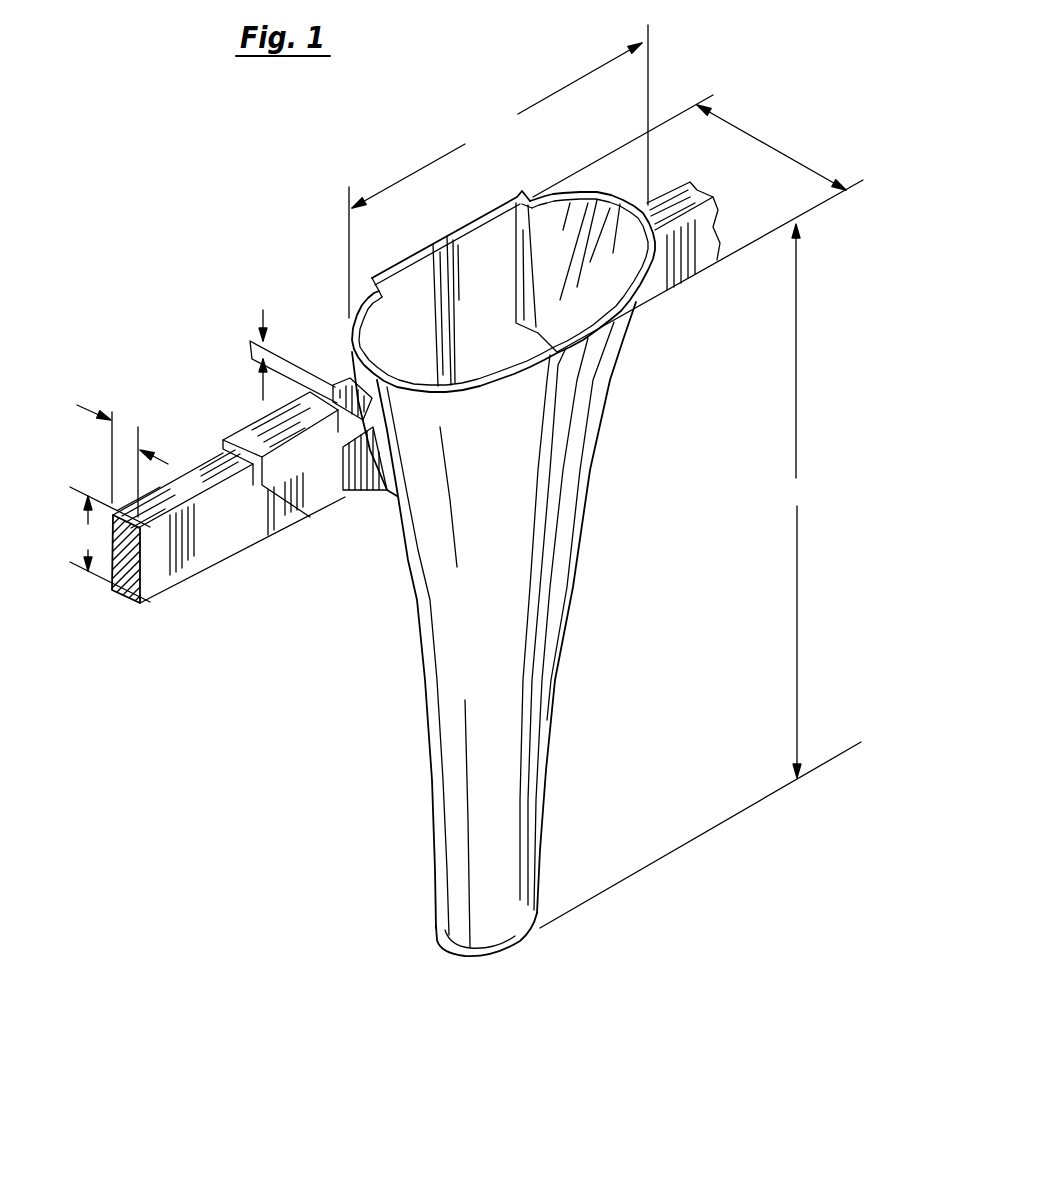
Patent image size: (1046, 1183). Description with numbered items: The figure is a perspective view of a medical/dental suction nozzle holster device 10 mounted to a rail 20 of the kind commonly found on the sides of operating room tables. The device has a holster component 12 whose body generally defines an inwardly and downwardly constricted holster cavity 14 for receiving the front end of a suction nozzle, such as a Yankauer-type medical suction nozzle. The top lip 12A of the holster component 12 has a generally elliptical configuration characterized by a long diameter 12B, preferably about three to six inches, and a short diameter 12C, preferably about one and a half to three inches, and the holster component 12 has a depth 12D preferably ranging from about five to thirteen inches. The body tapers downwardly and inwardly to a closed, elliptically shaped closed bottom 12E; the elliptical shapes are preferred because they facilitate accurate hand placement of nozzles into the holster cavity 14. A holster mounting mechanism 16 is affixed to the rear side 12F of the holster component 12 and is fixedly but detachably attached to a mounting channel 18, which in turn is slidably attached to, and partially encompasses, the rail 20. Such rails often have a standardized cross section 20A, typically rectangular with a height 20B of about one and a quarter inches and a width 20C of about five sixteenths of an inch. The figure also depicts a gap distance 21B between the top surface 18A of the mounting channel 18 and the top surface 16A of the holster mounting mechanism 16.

The medical/dental suction nozzle holster device 10 is at (337, 783).
The holster component 12 is at (517, 588).
The top lip 12A is at (618, 195).
The long diameter 12B is at (498, 171).
The short diameter 12C is at (698, 223).
The depth 12D is at (700, 576).
The closed bottom 12E is at (513, 940).
The rear side 12F is at (412, 252).
The holster cavity 14 is at (550, 268).
The holster mounting mechanism 16 is at (343, 494).
The top surface of holster mounting component 16A is at (353, 383).
The mounting channel 18 is at (308, 515).
The top surface of mounting channel 18A is at (262, 440).
The rail 20 is at (200, 533).
The cross section 20A is at (122, 597).
The height 20B is at (106, 544).
The width 20C is at (124, 430).
The gap distance 21B is at (252, 342).